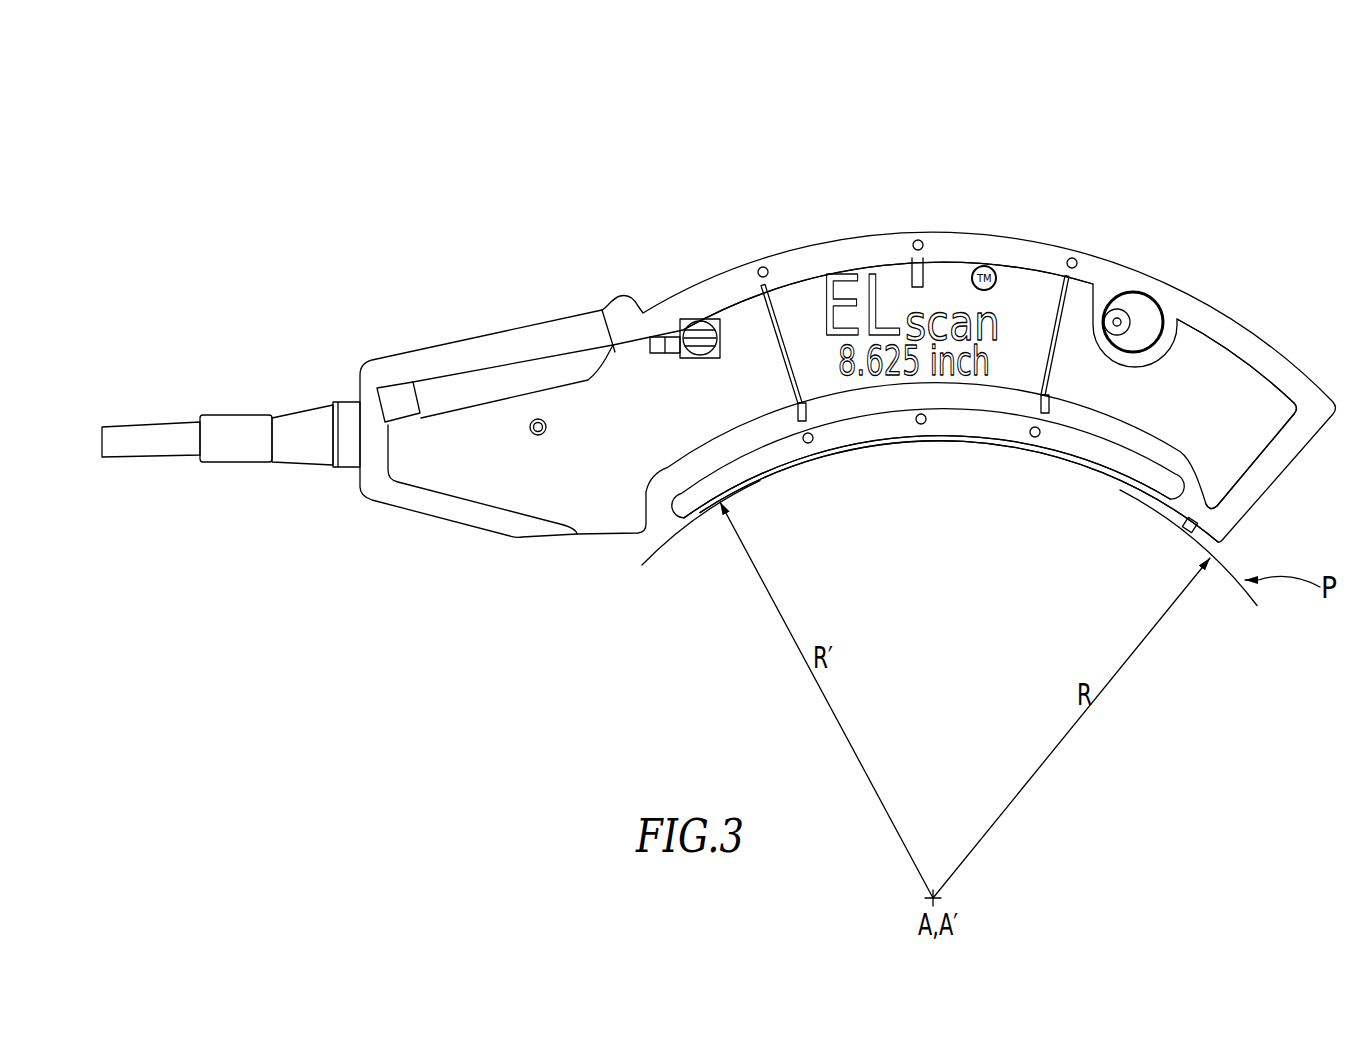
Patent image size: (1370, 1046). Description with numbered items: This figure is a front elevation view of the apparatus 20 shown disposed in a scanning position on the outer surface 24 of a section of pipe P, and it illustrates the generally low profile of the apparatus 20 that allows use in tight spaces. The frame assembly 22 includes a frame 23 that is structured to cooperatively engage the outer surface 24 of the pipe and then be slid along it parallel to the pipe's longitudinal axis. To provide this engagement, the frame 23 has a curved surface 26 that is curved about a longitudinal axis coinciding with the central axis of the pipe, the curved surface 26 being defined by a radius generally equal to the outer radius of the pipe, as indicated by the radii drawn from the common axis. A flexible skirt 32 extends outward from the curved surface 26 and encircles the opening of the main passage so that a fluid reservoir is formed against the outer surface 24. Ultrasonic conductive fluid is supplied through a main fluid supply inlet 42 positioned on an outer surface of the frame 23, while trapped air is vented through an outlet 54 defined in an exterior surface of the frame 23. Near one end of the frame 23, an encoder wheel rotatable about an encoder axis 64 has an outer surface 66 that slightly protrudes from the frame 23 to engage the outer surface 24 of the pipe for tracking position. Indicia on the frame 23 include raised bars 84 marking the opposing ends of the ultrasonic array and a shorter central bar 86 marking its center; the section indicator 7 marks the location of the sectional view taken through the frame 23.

The apparatus 20 is at (1082, 162).
The frame assembly 22 is at (1135, 233).
The frame 23 is at (1200, 312).
The outer surface 24 is at (1230, 562).
The curved surface 26 is at (1113, 483).
The skirt 32 is at (1040, 453).
The main fluid supply inlet 42 is at (660, 355).
The outlet 54 is at (912, 420).
The encoder axis 64 is at (924, 404).
The outer surface of encoder wheel 66 is at (1182, 535).
The raised bars 84 is at (773, 345).
The central bar 86 is at (905, 270).
The section line 7 is at (947, 163).